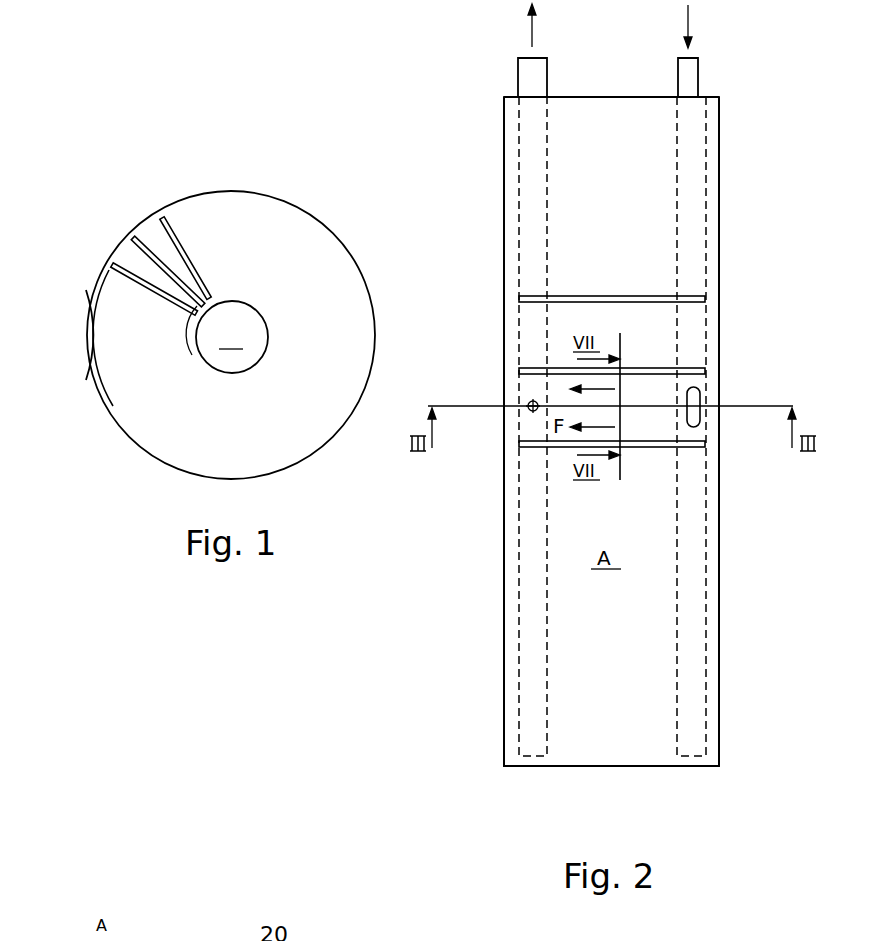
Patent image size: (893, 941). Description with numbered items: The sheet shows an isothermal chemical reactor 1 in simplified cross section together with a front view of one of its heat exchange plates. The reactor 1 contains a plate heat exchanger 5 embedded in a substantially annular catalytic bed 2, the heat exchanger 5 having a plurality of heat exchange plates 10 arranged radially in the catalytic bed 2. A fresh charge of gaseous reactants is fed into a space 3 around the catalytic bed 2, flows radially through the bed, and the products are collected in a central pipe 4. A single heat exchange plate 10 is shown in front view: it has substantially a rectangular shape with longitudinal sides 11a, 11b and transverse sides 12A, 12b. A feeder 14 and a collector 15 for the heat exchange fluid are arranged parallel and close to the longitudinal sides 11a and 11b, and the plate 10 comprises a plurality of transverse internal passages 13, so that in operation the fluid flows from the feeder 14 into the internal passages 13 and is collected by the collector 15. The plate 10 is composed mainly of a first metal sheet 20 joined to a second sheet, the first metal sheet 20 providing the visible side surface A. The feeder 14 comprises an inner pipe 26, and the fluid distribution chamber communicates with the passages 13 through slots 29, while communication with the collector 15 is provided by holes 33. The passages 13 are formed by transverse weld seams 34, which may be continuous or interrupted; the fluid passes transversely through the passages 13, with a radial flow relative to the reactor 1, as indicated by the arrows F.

In FIG. 1, the isothermal chemical reactor 1 is at (122, 478).
In FIG. 1, the catalytic bed 2 is at (108, 330).
In FIG. 1, the space 3 is at (94, 290).
In FIG. 1, the central pipe 4 is at (227, 337).
In FIG. 1, the plate heat exchanger 5 is at (231, 271).
In FIG. 1, the heat exchange plate 10 is at (179, 249).
In FIG. 2, the heat exchange plate 10 is at (421, 664).
In FIG. 2, the longitudinal side 11a is at (719, 506).
In FIG. 2, the longitudinal side 11b is at (504, 506).
In FIG. 2, the transverse side 12A is at (618, 95).
In FIG. 2, the transverse side 12b is at (650, 766).
In FIG. 2, the transverse internal passages 13 is at (580, 308).
In FIG. 2, the feeder 14 is at (687, 160).
In FIG. 2, the collector 15 is at (536, 162).
In FIG. 2, the first metal sheet 20 is at (585, 742).
In FIG. 2, the inner pipe 26 is at (690, 72).
In FIG. 2, the slots 29 is at (700, 408).
In FIG. 2, the holes 33 is at (528, 409).
In FIG. 2, the transverse weld seams 34 is at (688, 367).